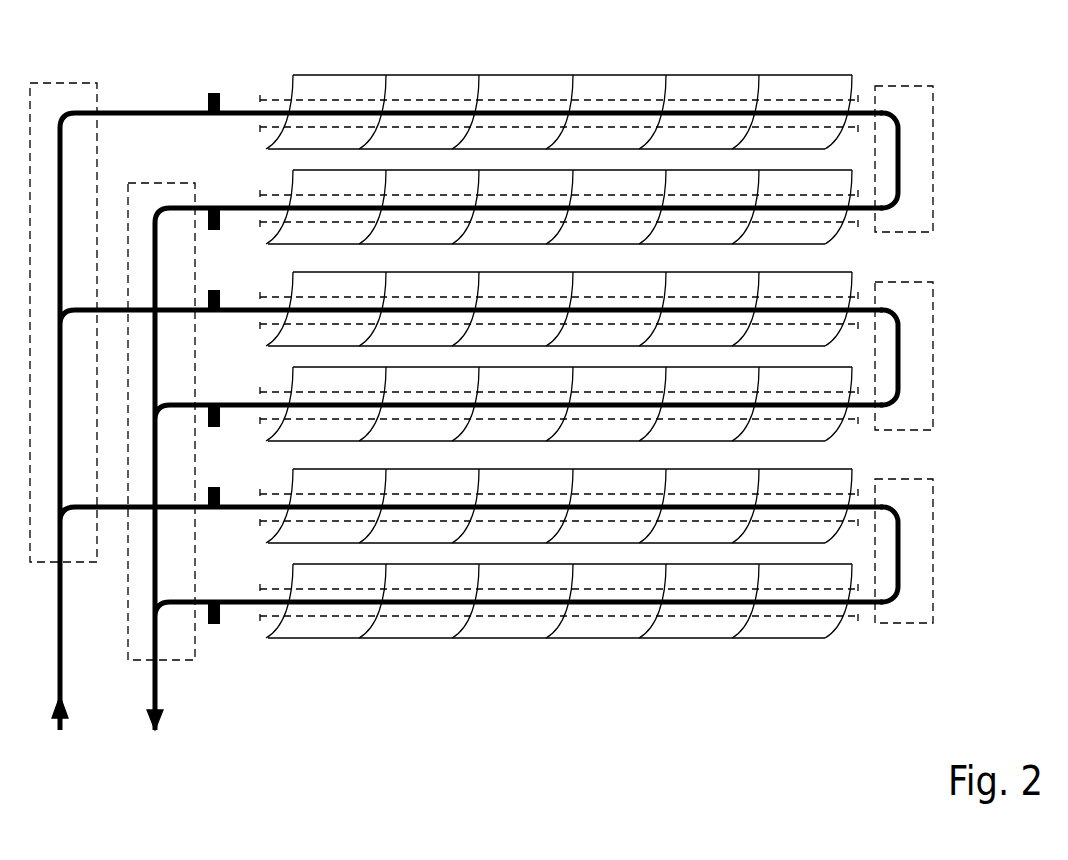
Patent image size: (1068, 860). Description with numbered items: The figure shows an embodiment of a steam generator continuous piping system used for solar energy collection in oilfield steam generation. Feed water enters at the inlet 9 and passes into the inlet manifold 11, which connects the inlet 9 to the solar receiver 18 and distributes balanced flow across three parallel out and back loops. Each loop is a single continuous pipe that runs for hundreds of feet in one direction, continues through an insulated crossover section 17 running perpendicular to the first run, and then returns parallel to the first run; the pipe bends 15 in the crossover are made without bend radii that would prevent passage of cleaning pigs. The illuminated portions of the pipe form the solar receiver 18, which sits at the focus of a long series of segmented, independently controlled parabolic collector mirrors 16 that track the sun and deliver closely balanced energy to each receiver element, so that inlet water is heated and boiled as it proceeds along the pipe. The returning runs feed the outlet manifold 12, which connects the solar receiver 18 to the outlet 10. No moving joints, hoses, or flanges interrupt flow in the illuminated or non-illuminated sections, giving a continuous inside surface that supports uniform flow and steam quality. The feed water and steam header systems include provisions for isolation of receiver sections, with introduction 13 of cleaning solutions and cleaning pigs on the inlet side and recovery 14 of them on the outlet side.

The inlet 9 is at (53, 688).
The outlet 10 is at (152, 701).
The inlet manifold 11 is at (58, 71).
The outlet manifold 12 is at (162, 171).
The introduction 13 is at (222, 532).
The recovery 14 is at (219, 196).
The pipe bends 15 is at (898, 110).
The collector mirrors 16 is at (826, 66).
The crossover section 17 is at (920, 77).
The solar receiver 18 is at (276, 85).